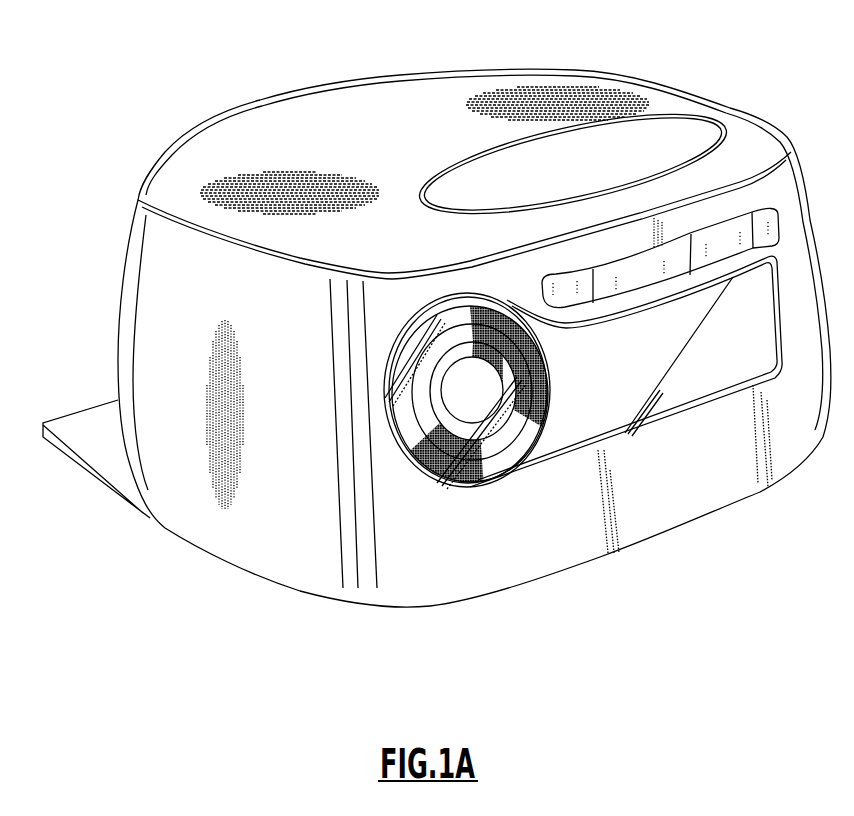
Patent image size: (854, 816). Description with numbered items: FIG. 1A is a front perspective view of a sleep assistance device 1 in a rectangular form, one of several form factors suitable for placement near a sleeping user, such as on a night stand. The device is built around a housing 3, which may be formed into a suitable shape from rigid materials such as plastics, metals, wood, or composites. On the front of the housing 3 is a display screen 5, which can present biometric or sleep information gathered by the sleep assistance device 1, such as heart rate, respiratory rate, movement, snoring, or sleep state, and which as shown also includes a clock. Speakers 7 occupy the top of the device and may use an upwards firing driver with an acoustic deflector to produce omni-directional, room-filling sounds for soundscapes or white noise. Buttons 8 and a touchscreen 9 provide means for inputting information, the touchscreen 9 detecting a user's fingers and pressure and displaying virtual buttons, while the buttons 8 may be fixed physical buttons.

The sleep assistance device 1 is at (160, 93).
The housing 3 is at (199, 487).
The display screen 5 is at (586, 431).
The speakers 7 is at (451, 118).
The buttons 8 is at (618, 165).
The touchscreen 9 is at (640, 433).